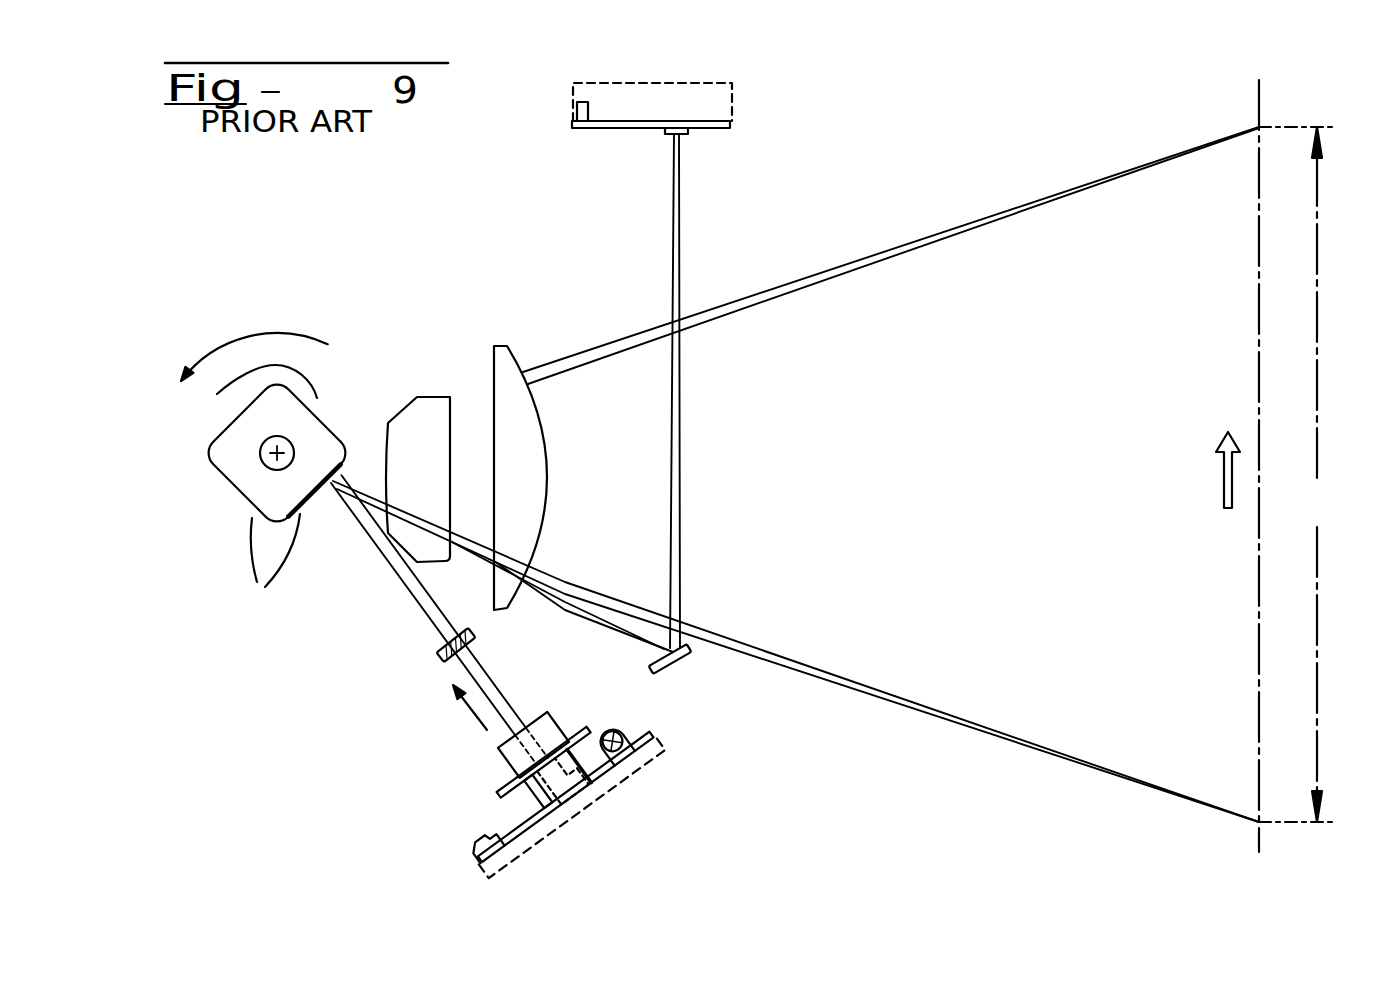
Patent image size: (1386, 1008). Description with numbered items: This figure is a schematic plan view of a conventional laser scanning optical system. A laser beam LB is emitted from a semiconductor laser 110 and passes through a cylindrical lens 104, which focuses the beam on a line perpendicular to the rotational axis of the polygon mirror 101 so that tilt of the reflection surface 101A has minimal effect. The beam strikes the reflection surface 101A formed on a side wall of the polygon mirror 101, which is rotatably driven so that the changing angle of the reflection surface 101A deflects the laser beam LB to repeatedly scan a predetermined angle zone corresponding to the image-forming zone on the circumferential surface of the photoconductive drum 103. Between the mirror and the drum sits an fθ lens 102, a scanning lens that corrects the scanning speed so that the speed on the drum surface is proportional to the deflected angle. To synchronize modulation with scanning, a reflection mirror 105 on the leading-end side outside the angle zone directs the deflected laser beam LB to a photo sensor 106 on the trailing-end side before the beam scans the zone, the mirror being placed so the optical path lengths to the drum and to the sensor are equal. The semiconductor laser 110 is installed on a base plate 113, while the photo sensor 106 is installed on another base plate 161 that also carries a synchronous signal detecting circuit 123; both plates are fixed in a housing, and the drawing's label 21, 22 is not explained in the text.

The polygon mirror 101 is at (250, 500).
The reflection surface 101A is at (243, 403).
The fθ lens 102 is at (537, 317).
The photoconductive drum 103 is at (1260, 309).
The cylindrical lens 104 is at (438, 652).
The reflection mirror 105 is at (673, 664).
The photo sensor 106 is at (683, 134).
The base plate 161 is at (730, 124).
The synchronous signal detecting circuit 123 is at (732, 93).
The semiconductor laser 110 is at (500, 793).
The base plate 113 is at (517, 832).
The base / housing 21 is at (576, 798).
The base / housing 22 is at (573, 817).
The laser beam LB is at (498, 690).